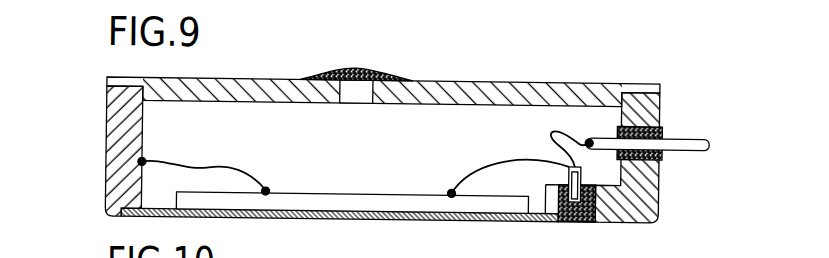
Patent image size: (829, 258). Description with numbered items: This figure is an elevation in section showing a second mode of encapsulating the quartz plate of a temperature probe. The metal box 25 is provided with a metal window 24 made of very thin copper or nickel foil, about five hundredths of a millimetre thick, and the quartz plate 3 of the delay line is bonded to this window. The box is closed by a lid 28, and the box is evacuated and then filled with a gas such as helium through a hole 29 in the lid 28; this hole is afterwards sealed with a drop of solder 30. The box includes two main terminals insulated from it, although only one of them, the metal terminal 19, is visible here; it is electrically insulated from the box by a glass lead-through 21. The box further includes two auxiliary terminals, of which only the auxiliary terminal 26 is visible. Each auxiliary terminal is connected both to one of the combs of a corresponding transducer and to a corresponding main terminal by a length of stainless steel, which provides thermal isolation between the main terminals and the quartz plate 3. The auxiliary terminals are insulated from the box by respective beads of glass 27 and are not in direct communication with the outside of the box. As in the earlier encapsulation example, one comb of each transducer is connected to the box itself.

The quartz plate 3 is at (300, 199).
The metal terminal 19 is at (700, 143).
The glass lead-through 21 is at (657, 120).
The metal window 24 is at (500, 216).
The metal box 25 is at (127, 134).
The auxiliary terminal 26 is at (570, 174).
The bead of glass 27 is at (588, 206).
The lid 28 is at (505, 90).
The hole 29 is at (353, 86).
The drop of solder 30 is at (345, 67).